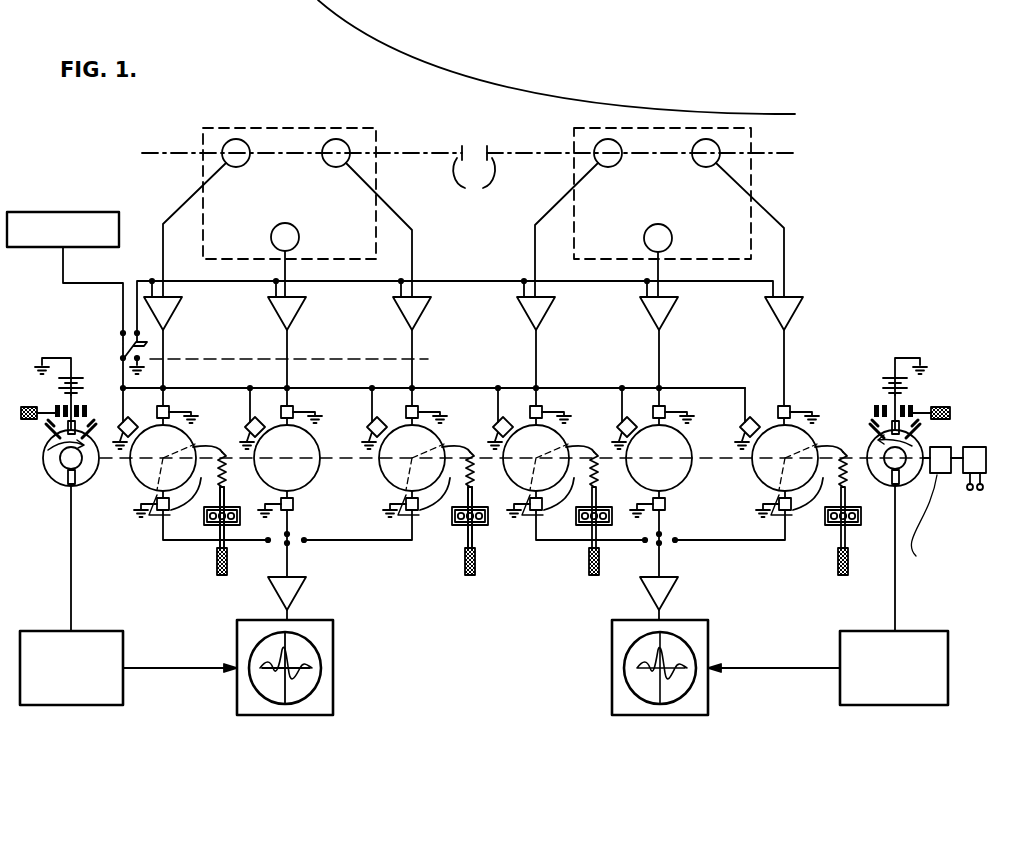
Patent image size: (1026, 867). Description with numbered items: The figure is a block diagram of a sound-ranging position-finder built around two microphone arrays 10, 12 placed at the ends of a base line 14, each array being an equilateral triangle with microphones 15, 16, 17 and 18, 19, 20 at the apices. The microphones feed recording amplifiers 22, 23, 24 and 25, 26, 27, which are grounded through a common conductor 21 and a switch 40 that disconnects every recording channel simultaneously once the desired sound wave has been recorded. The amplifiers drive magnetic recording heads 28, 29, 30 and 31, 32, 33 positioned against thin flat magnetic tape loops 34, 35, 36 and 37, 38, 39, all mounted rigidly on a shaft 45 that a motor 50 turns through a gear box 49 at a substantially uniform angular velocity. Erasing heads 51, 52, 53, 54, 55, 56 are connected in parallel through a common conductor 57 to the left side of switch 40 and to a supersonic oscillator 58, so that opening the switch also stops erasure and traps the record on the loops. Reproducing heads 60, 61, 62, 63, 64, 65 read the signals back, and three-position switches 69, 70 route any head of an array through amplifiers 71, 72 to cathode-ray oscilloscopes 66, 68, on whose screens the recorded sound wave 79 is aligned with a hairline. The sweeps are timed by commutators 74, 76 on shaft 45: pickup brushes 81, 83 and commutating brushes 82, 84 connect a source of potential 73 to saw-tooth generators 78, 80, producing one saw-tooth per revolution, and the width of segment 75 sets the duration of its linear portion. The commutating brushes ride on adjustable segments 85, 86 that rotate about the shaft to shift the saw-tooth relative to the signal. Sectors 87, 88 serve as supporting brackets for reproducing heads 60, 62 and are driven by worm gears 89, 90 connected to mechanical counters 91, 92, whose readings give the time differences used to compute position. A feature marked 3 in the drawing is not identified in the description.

The lead line 3 is at (291, 359).
The microphone array 10 is at (203, 137).
The microphone array 12 is at (751, 137).
The base line 14 is at (474, 172).
The microphone 15 is at (238, 167).
The microphone 16 is at (345, 166).
The microphone 17 is at (292, 211).
The microphone 18 is at (600, 166).
The microphone 19 is at (712, 166).
The microphone 20 is at (660, 224).
The common conductor 21 is at (203, 281).
The amplifier 22 is at (172, 315).
The amplifier 23 is at (296, 315).
The amplifier 24 is at (421, 315).
The amplifier 25 is at (545, 315).
The amplifier 26 is at (668, 315).
The amplifier 27 is at (793, 315).
The magnetic recording head 28 is at (170, 407).
The magnetic recording head 29 is at (294, 407).
The magnetic recording head 30 is at (419, 407).
The magnetic recording head 31 is at (544, 407).
The magnetic recording head 32 is at (667, 407).
The magnetic recording head 33 is at (792, 407).
The magnetic loop 34 is at (194, 443).
The magnetic loop 35 is at (317, 443).
The magnetic loop 36 is at (443, 443).
The magnetic loop 37 is at (568, 443).
The magnetic loop 38 is at (690, 443).
The magnetic loop 39 is at (755, 470).
The switch 40 is at (131, 343).
The shaft 45 is at (336, 458).
The gear box 49 is at (938, 447).
The motor 50 is at (978, 447).
The erasing head 51 is at (131, 416).
The erasing head 52 is at (257, 416).
The erasing head 53 is at (379, 416).
The erasing head 54 is at (504, 416).
The erasing head 55 is at (628, 416).
The erasing head 56 is at (751, 416).
The common conductor 57 is at (208, 388).
The supersonic oscillator 58 is at (32, 212).
The reproducing head 60 is at (172, 508).
The reproducing head 61 is at (294, 508).
The reproducing head 62 is at (417, 508).
The reproducing head 63 is at (541, 508).
The reproducing head 64 is at (666, 508).
The reproducing head 65 is at (791, 508).
The cathode-ray oscilloscope 66 is at (333, 655).
The cathode-ray oscilloscope 68 is at (708, 655).
The three-position switch 69 is at (290, 546).
The three-position switch 70 is at (662, 546).
The amplifier 71 is at (300, 601).
The amplifier 72 is at (672, 601).
The source of potential 73 is at (73, 380).
The commutator 74 is at (43, 462).
The segment 75 is at (55, 448).
The commutator 76 is at (893, 488).
The saw-tooth generator 78 is at (123, 686).
The recorded sound wave 79 is at (313, 671).
The saw-tooth generator 80 is at (948, 686).
The pickup brush 81 is at (68, 483).
The commutating brush 82 is at (88, 415).
The pickup brush 83 is at (888, 475).
The commutating brush 84 is at (878, 421).
The adjustable segment 85 is at (48, 440).
The adjustable segment 86 is at (878, 441).
The sector 87 is at (152, 502).
The sector 88 is at (402, 503).
The worm gear 89 is at (226, 480).
The worm gear 90 is at (473, 480).
The mechanical counter 91 is at (226, 545).
The mechanical counter 92 is at (473, 545).